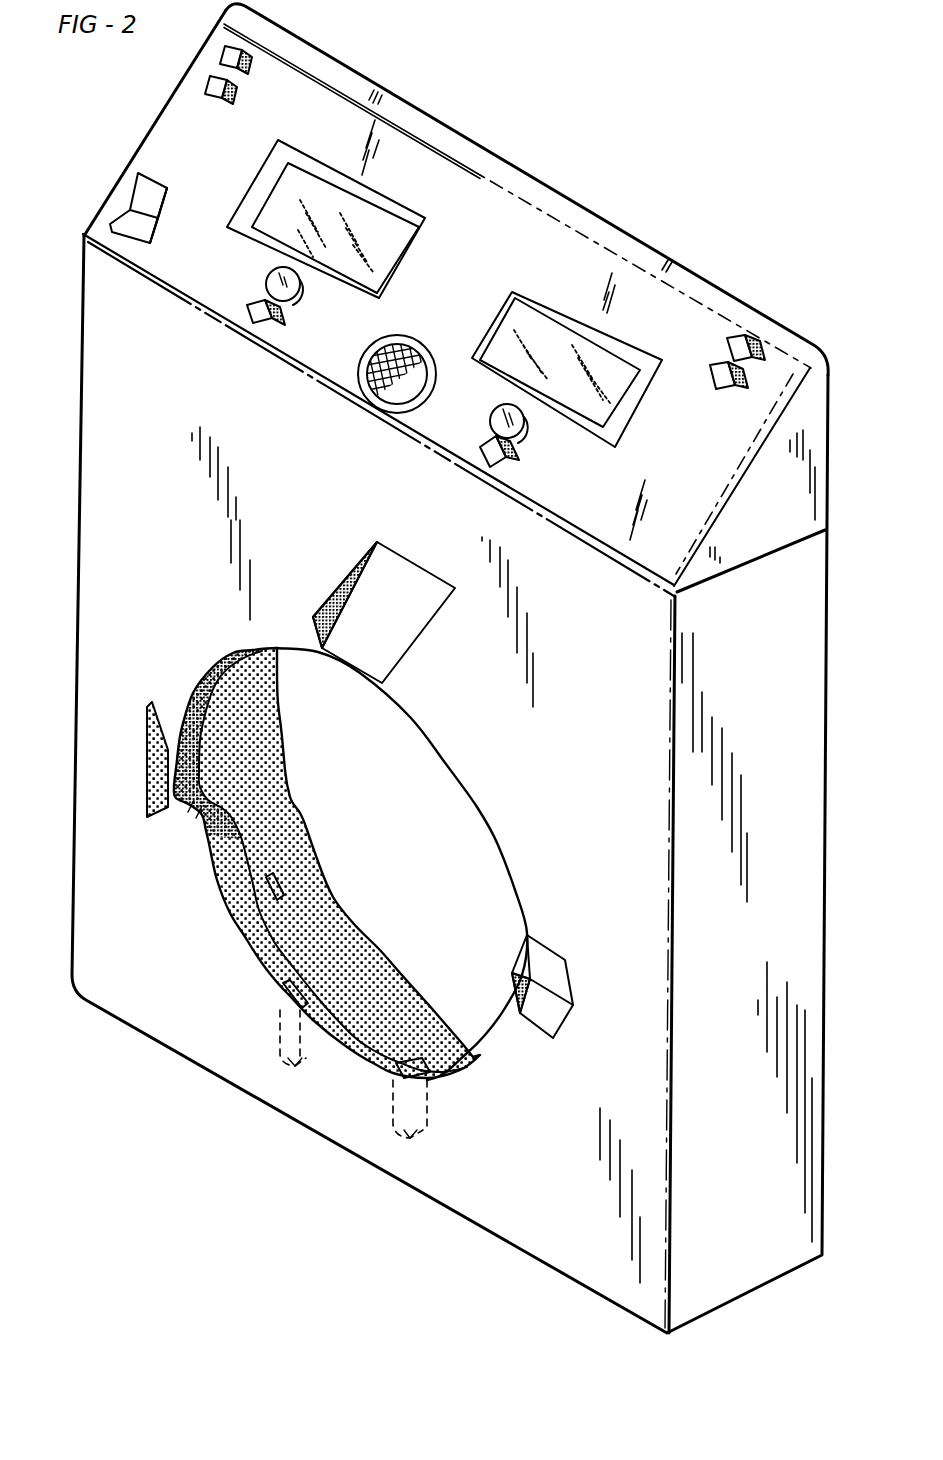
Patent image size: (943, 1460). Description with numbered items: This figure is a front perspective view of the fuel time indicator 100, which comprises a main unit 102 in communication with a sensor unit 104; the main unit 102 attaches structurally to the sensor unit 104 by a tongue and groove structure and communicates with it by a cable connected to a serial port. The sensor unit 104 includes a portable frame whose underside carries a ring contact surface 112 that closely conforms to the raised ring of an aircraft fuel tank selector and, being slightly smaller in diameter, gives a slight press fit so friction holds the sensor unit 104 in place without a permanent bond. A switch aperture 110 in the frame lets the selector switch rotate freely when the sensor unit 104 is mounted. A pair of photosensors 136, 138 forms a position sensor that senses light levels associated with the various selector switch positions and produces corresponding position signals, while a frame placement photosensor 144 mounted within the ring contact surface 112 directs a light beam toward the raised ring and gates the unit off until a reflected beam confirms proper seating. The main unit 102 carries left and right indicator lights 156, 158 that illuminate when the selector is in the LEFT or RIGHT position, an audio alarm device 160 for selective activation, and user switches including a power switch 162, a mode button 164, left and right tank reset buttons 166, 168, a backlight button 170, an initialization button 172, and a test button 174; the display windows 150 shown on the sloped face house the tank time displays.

The fuel time indicator 100 is at (566, 182).
The main unit 102 is at (128, 140).
The sensor unit 104 is at (68, 906).
The switch aperture 110 is at (463, 813).
The ring contact surface 112 is at (264, 808).
The photosensor 136 is at (280, 1030).
The photosensor 138 is at (394, 1100).
The frame placement photosensor 144 is at (286, 888).
The display windows 150 is at (444, 293).
The left indicator light 156 is at (267, 282).
The right indicator light 158 is at (526, 432).
The audio alarm device 160 is at (360, 370).
The power switch 162 is at (113, 226).
The mode button 164 is at (222, 50).
The left tank reset button 166 is at (254, 318).
The right tank reset button 168 is at (478, 452).
The backlight button 170 is at (208, 82).
The initialization button 172 is at (728, 344).
The test button 174 is at (720, 392).